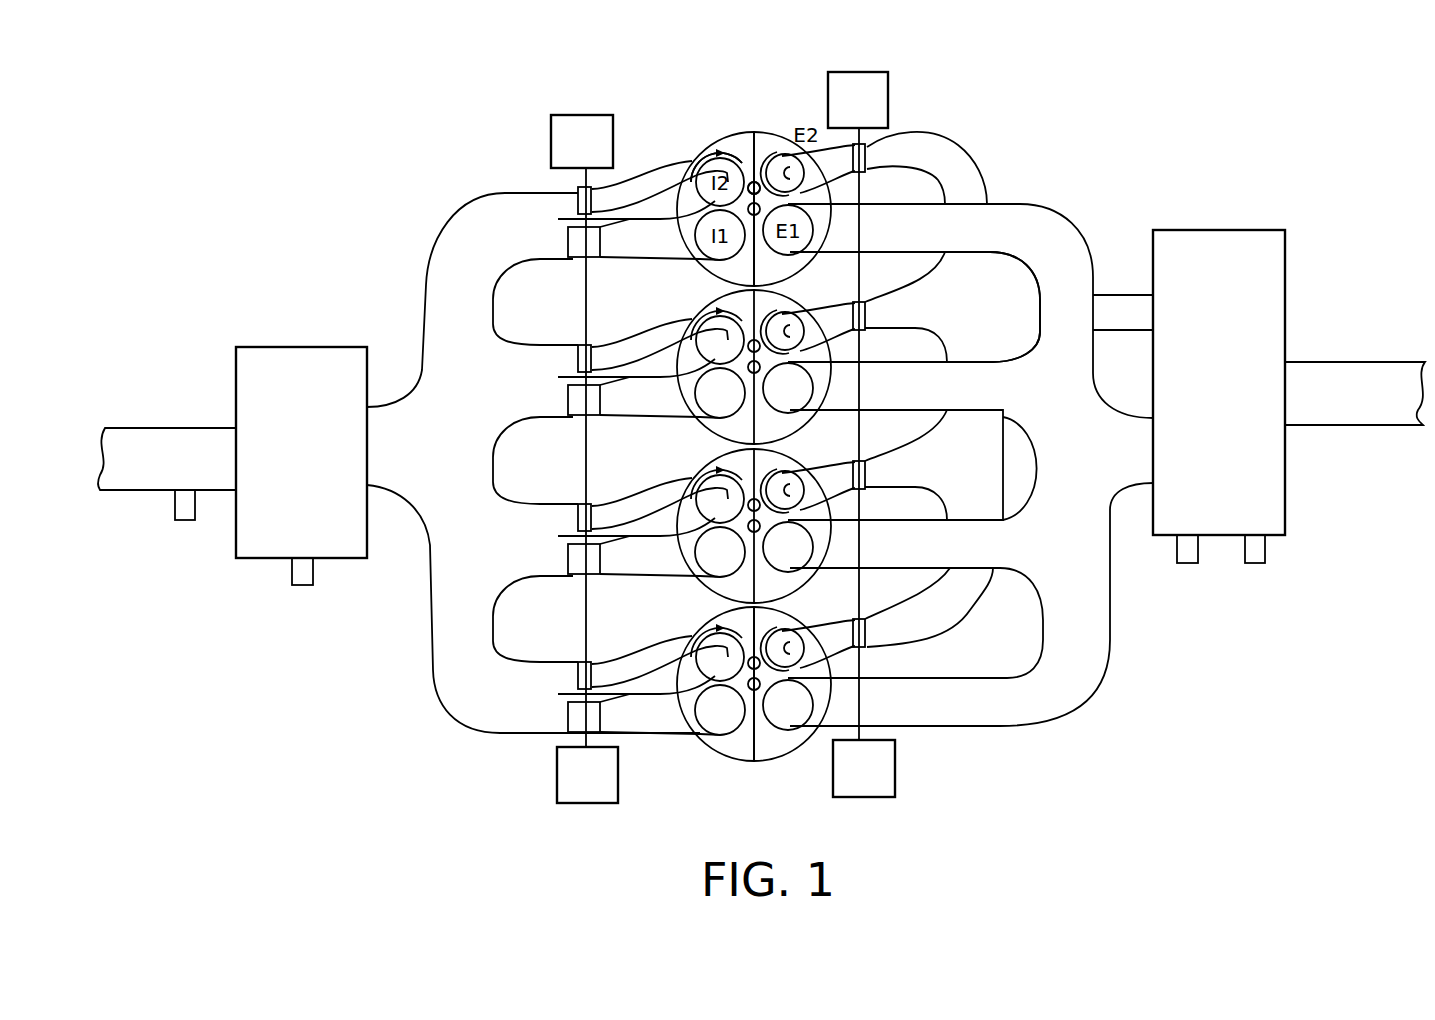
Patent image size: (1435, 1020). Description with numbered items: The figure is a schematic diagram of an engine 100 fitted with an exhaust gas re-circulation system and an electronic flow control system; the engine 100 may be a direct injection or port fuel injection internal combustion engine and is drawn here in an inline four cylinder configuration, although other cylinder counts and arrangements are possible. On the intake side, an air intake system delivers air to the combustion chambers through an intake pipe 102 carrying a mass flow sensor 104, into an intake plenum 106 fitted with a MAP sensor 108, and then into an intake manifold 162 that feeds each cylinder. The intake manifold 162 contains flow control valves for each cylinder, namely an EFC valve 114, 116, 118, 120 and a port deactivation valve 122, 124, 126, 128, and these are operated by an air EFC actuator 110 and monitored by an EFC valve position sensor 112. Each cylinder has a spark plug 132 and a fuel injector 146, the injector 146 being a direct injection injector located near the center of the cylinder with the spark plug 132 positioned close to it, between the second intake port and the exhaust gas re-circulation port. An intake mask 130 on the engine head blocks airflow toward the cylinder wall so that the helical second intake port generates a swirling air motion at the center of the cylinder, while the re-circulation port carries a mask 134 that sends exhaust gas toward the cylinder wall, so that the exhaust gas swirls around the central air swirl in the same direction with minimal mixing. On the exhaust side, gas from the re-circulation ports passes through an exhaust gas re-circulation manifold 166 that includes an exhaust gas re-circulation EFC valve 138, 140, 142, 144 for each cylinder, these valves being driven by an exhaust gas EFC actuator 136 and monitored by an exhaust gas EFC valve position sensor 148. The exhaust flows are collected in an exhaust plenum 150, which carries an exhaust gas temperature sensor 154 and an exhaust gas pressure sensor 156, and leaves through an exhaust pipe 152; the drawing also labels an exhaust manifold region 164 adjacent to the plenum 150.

The engine 100 is at (1088, 114).
The intake pipe 102 is at (151, 471).
The mass flow sensor 104 is at (172, 508).
The intake plenum 106 is at (283, 524).
The MAP sensor 108 is at (290, 580).
The air EFC actuator 110 is at (564, 156).
The EFC valve position sensor 112 is at (569, 789).
The EFC valve 114 is at (578, 196).
The EFC valve 116 is at (578, 362).
The EFC valve 118 is at (578, 521).
The EFC valve 120 is at (578, 679).
The port deactivation valve 122 is at (568, 233).
The port deactivation valve 124 is at (568, 391).
The port deactivation valve 126 is at (568, 549).
The port deactivation valve 128 is at (570, 712).
The intake mask 130 is at (681, 163).
The spark plug 132 is at (753, 178).
The mask 134 is at (759, 160).
The exhaust gas EFC actuator 136 is at (840, 114).
The exhaust gas re-circulation EFC valve 138 is at (866, 148).
The exhaust gas re-circulation EFC valve 140 is at (866, 316).
The exhaust gas re-circulation EFC valve 142 is at (866, 477).
The exhaust gas re-circulation EFC valve 144 is at (866, 631).
The fuel injector 146 is at (747, 702).
The exhaust gas EFC valve position sensor 148 is at (846, 782).
The exhaust plenum 150 is at (1202, 499).
The exhaust pipe 152 is at (1335, 404).
The exhaust gas temperature sensor 154 is at (1173, 558).
The exhaust gas pressure sensor 156 is at (1242, 558).
The intake manifold 162 is at (450, 430).
The exhaust manifold 164 is at (1034, 386).
The exhaust gas re-circulation manifold 166 is at (951, 326).